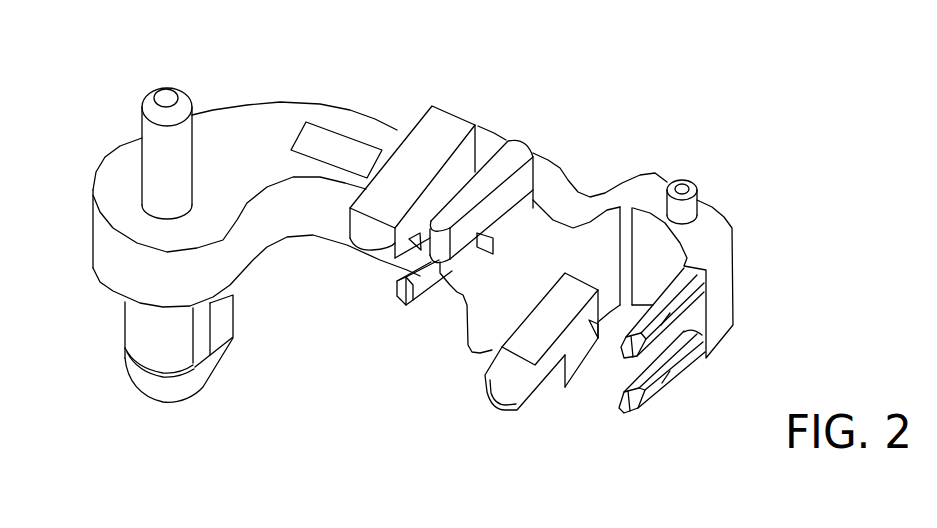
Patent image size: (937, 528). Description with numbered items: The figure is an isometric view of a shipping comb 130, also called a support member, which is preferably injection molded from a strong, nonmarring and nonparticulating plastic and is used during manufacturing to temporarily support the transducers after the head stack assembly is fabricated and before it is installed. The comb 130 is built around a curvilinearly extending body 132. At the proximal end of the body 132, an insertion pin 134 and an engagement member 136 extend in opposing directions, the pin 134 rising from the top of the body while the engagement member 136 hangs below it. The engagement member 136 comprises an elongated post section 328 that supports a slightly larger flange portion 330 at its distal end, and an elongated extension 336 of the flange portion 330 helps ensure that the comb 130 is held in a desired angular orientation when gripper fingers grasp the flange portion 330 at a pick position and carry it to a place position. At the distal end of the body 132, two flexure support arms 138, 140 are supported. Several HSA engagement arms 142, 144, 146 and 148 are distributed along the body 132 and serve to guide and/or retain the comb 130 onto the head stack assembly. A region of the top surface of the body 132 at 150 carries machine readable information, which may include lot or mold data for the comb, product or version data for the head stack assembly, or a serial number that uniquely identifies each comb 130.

The shipping comb 130 is at (385, 250).
The curvilinearly extending body 132 is at (413, 192).
The insertion pin 134 is at (114, 139).
The engagement member 136 is at (170, 374).
The flexure support arm 138 is at (657, 369).
The flexure support arm 140 is at (507, 363).
The HSA engagement arm 142 is at (481, 379).
The HSA engagement arm 144 is at (399, 296).
The HSA engagement arm 146 is at (446, 257).
The HSA engagement arm 148 is at (384, 195).
The machine readable information 150 is at (354, 106).
The elongated post section 328 is at (115, 319).
The flange portion 330 is at (160, 406).
The elongated extension 336 is at (243, 331).